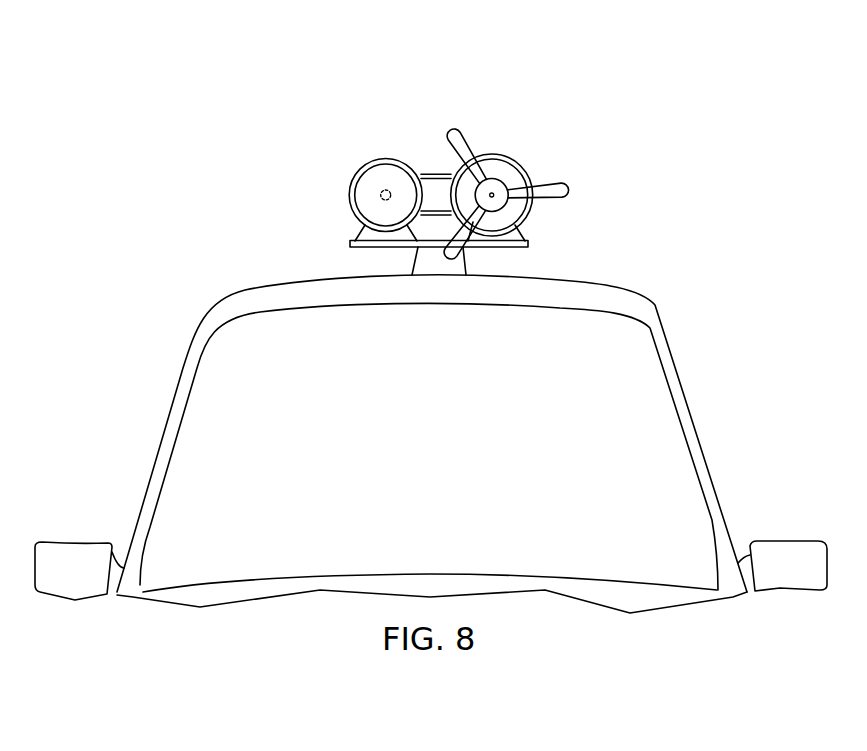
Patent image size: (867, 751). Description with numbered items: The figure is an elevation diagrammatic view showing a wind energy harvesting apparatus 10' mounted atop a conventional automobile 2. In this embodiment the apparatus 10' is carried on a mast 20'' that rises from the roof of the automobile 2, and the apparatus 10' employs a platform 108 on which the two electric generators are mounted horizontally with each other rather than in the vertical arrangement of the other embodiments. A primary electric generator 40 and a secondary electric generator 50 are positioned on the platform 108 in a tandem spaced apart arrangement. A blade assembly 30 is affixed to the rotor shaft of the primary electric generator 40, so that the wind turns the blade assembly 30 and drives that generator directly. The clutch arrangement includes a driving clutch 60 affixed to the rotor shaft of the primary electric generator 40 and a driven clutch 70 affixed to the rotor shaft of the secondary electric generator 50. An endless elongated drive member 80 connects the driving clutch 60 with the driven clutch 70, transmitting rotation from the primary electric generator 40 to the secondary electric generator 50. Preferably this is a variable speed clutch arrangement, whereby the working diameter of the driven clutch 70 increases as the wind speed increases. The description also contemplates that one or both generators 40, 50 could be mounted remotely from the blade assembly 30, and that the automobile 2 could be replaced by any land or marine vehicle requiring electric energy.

The conventional automobile 2 is at (230, 288).
The wind energy harvesting apparatus 10' is at (445, 187).
The mast 20'' is at (429, 305).
The blade assembly 30 is at (563, 185).
The primary electric generator 40 is at (540, 174).
The secondary electric generator 50 is at (347, 192).
The driving clutch 60 is at (503, 154).
The driven clutch 70 is at (336, 158).
The drive member 80 is at (431, 174).
The platform 108 is at (528, 244).